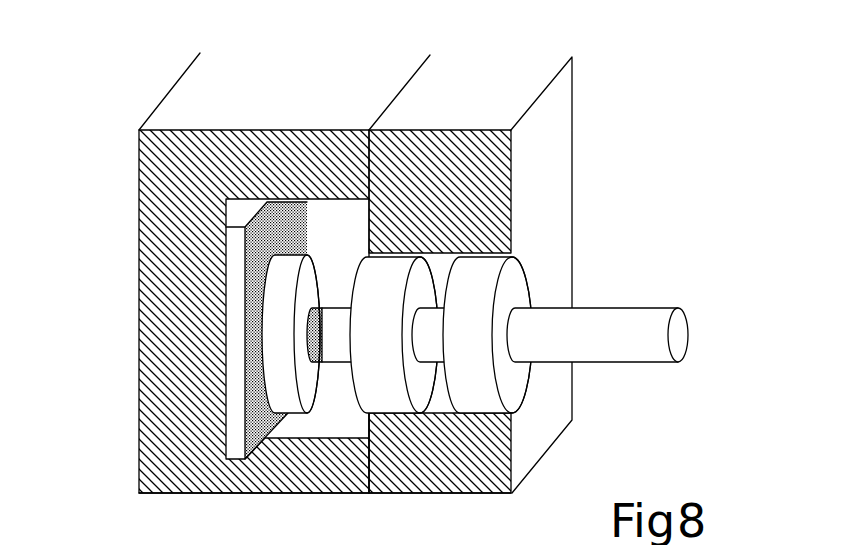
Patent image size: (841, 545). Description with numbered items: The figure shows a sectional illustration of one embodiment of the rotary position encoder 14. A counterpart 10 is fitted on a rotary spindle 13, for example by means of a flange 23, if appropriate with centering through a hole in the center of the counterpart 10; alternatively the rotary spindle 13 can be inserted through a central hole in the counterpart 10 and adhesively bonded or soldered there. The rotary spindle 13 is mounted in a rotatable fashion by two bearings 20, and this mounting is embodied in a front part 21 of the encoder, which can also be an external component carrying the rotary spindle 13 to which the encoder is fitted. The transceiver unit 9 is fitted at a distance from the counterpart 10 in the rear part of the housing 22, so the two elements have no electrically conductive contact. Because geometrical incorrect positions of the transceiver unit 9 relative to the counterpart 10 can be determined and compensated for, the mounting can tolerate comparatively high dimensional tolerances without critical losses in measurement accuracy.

The rotary position encoder 14 is at (623, 140).
The housing 22 is at (162, 200).
The front part 21 is at (483, 225).
The transceiver unit 9 is at (230, 285).
The counterpart 10 is at (270, 340).
The flange 23 is at (313, 357).
The bearings 20 is at (393, 388).
The rotary spindle 13 is at (633, 325).